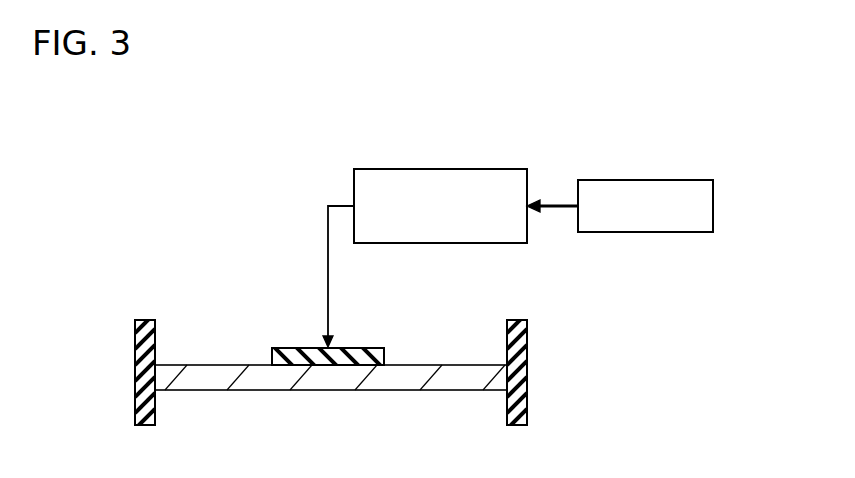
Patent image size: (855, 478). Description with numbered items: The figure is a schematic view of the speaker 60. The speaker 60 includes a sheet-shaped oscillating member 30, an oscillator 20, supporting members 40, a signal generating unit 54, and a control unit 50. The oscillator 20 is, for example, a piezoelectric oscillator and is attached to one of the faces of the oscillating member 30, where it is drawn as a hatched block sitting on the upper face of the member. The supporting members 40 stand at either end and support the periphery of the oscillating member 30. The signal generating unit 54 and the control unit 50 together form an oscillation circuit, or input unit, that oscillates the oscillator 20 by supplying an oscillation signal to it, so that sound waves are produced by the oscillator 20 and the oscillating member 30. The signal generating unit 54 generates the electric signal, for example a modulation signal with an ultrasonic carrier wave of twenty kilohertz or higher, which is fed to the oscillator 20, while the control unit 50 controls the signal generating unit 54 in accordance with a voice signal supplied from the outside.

The speaker 60 is at (201, 102).
The signal generating unit 54 is at (500, 168).
The control unit 50 is at (663, 186).
The supporting member 40 is at (135, 352).
The oscillating member 30 is at (464, 365).
The oscillator 20 is at (284, 348).